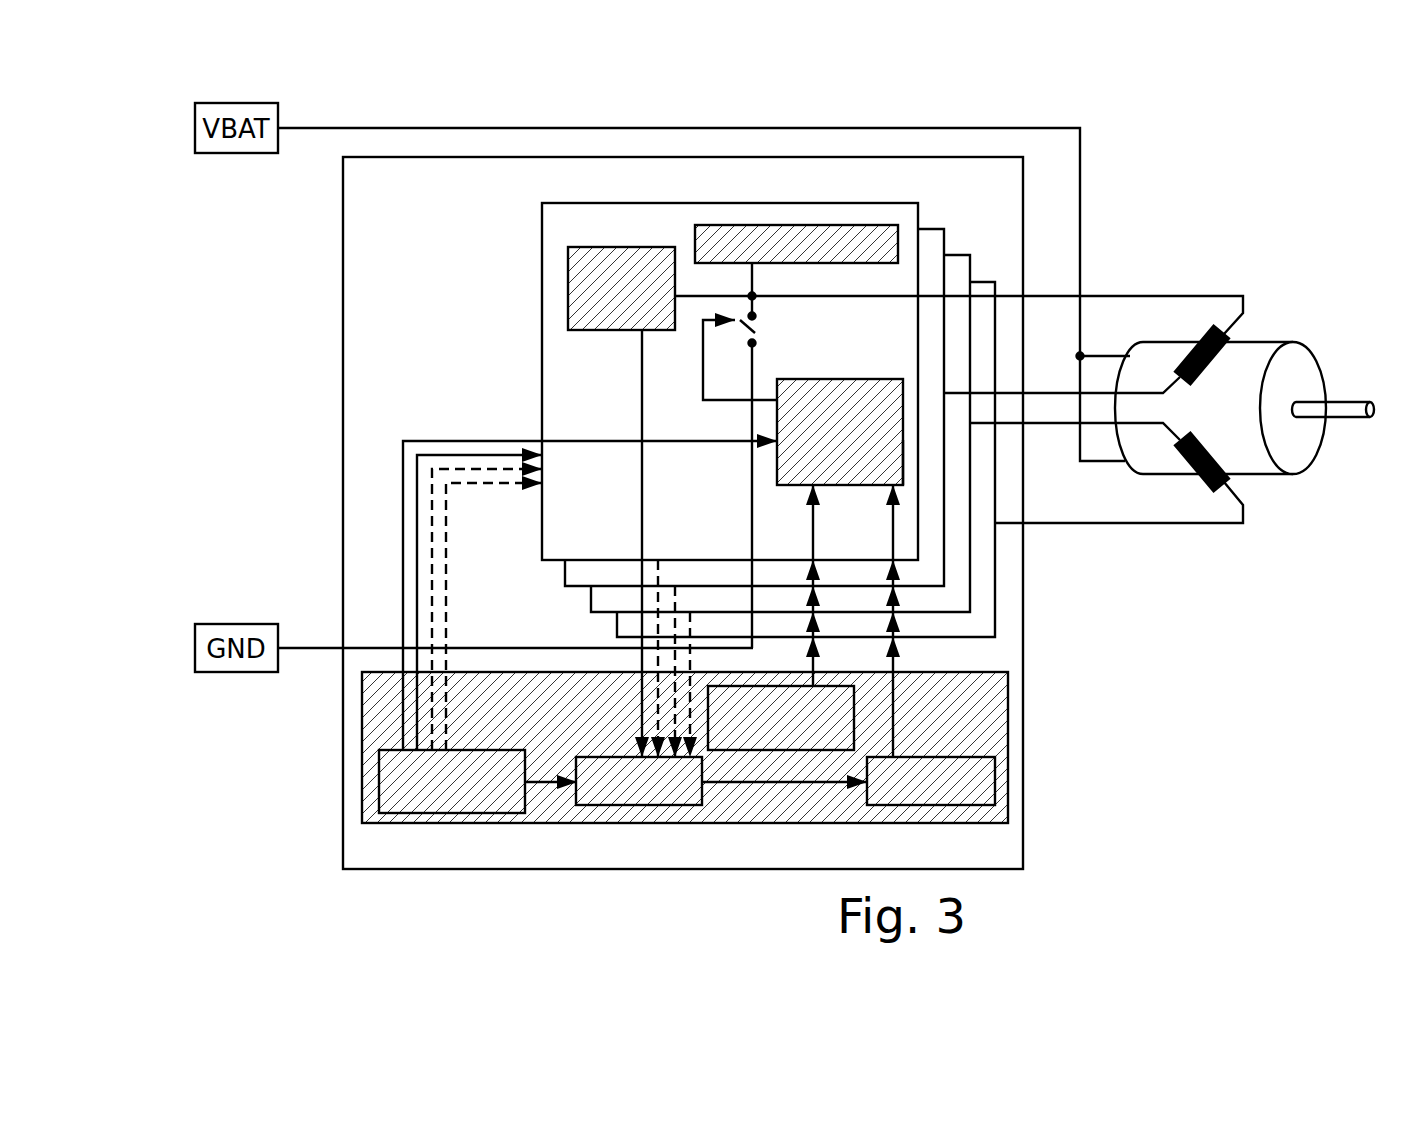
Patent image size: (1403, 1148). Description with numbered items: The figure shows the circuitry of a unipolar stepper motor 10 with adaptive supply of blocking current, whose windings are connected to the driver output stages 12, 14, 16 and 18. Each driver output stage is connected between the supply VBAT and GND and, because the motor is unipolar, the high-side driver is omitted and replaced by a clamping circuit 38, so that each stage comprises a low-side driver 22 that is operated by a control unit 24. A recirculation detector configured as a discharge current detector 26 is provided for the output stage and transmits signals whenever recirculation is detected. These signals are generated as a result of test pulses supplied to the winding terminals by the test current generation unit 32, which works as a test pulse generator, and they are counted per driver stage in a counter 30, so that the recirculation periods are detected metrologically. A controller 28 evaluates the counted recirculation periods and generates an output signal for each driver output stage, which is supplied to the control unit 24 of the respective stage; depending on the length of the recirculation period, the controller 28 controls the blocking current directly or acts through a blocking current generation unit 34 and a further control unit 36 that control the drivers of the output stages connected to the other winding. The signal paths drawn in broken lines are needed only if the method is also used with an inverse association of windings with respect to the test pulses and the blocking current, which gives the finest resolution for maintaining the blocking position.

The stepper motor 10 is at (1258, 282).
The driver output stage 12 is at (903, 217).
The driver output stage 14 is at (955, 280).
The driver output stage 16 is at (958, 277).
The driver output stage 18 is at (987, 291).
The low-side driver 22 is at (735, 317).
The control unit 24 is at (840, 423).
The discharge current detector 26 is at (590, 287).
The controller 28 is at (958, 787).
The counter 30 is at (663, 795).
The test current generation unit 32 is at (440, 797).
The blocking current generation unit 34 is at (912, 460).
The control unit 36 is at (822, 713).
The clamping circuit 38 is at (785, 240).